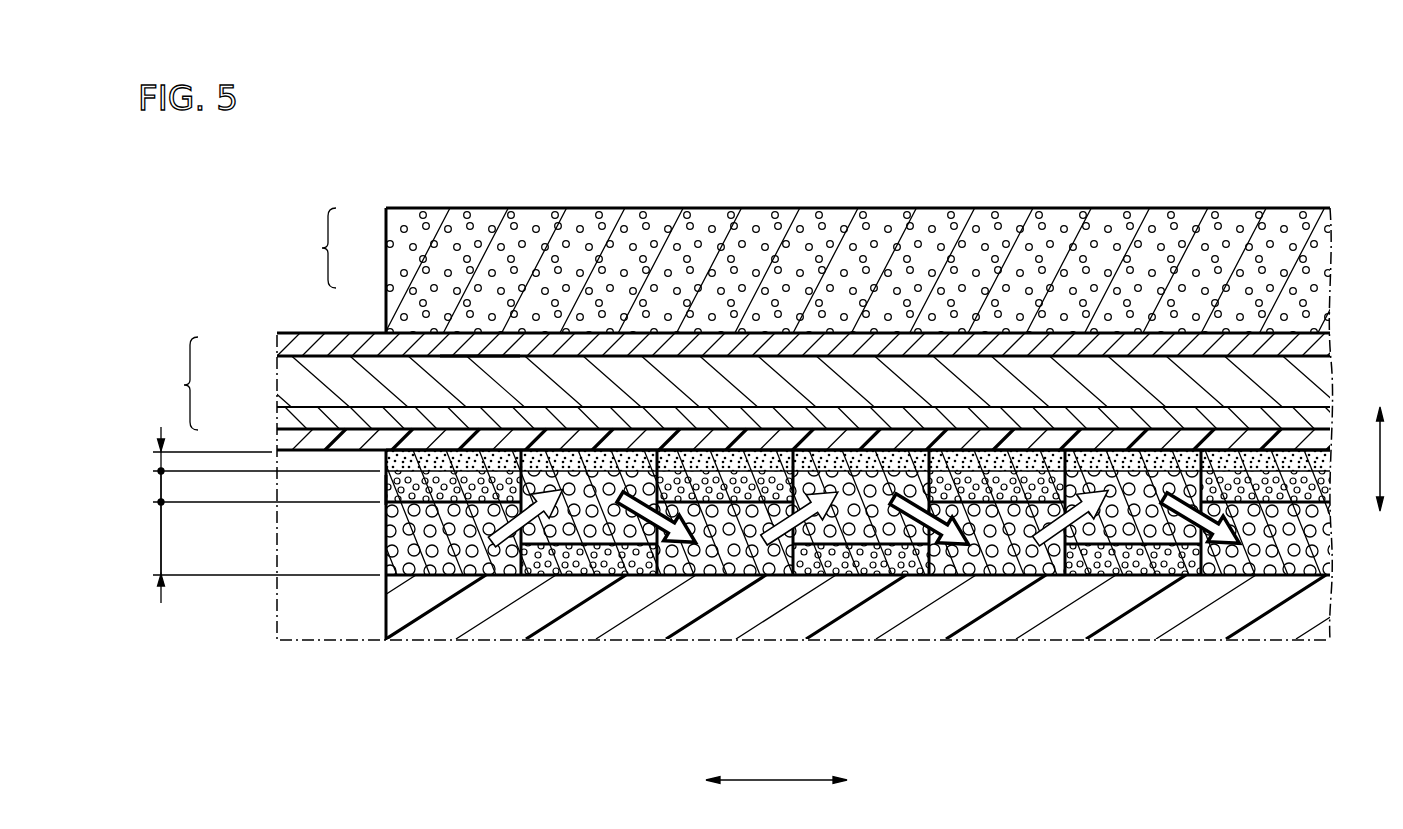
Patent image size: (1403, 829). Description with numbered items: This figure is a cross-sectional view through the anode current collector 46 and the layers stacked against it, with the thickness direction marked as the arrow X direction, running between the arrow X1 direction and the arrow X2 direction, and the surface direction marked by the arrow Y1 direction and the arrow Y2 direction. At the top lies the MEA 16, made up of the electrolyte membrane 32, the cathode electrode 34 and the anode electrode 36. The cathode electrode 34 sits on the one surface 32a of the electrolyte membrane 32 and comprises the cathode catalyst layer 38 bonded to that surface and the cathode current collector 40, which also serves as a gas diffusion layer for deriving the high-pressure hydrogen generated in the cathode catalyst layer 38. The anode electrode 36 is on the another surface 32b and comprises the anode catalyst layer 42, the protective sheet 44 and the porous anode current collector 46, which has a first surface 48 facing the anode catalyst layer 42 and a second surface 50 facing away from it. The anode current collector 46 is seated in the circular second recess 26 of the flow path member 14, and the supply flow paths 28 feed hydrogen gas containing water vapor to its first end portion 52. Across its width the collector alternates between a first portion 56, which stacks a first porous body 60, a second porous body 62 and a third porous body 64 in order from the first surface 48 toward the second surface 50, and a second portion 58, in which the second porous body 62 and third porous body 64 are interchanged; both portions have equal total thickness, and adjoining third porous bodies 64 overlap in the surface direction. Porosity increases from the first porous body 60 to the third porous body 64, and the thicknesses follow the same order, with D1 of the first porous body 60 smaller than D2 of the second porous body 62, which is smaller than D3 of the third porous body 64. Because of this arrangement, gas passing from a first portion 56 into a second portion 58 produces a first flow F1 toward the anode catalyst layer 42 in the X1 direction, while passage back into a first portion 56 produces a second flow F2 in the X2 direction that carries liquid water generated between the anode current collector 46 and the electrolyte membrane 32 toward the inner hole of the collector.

The flow path member 14 is at (645, 622).
The MEA 16 is at (1190, 205).
The second recess 26 is at (422, 573).
The supply flow paths 28 is at (322, 553).
The electrolyte membrane 32 is at (310, 387).
The one surface of the electrolyte membrane 32a is at (477, 355).
The another surface of the electrolyte membrane 32b is at (528, 406).
The cathode electrode 34 is at (315, 248).
The anode electrode 36 is at (177, 383).
The cathode catalyst layer 38 is at (338, 340).
The cathode current collector 40 is at (407, 233).
The anode catalyst layer 42 is at (293, 413).
The protective sheet 44 is at (287, 438).
The anode current collector 46 is at (380, 492).
The first surface 48 is at (755, 450).
The second surface 50 is at (732, 577).
The first end portion 52 is at (383, 520).
The first portion 56 is at (405, 577).
The second portion 58 is at (533, 577).
The first porous body 60 is at (476, 462).
The second porous body 62 is at (463, 492).
The third porous body 64 is at (436, 566).
The thickness of the first porous body D1 is at (161, 460).
The thickness of the second porous body D2 is at (145, 487).
The thickness of the third porous body D3 is at (145, 538).
The first flow F1 is at (777, 537).
The second flow F2 is at (947, 542).
The arrow X direction X is at (1387, 459).
The arrow X1 direction X1 is at (1382, 399).
The arrow X2 direction X2 is at (1382, 527).
The arrow Y1 direction Y1 is at (764, 782).
The arrow Y2 direction Y2 is at (861, 782).